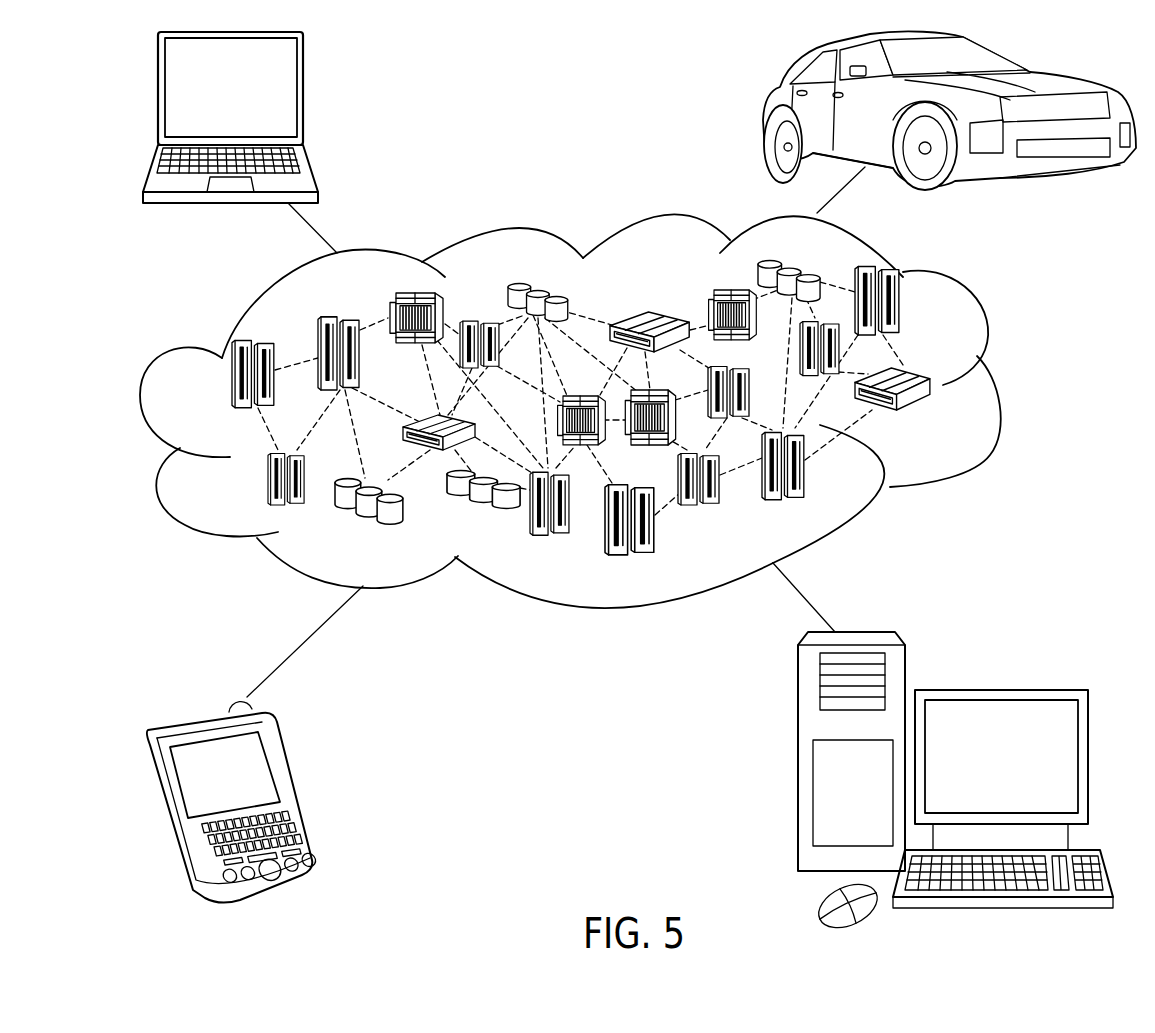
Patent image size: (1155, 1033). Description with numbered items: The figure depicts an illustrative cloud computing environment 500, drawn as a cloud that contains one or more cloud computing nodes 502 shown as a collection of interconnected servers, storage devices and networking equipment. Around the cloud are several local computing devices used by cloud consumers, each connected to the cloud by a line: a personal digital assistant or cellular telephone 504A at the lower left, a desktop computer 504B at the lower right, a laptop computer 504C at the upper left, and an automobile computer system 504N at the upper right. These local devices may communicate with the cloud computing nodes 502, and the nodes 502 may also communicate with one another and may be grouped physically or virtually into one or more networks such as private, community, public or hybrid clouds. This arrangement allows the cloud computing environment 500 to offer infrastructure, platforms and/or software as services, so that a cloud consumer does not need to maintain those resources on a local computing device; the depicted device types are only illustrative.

The cloud computing environment 500 is at (998, 383).
The cloud computing nodes 502 is at (940, 417).
The personal digital assistant (PDA) or cellular telephone 504A is at (292, 790).
The desktop computer 504B is at (998, 690).
The laptop computer 504C is at (303, 96).
The automobile computer system 504N is at (762, 112).